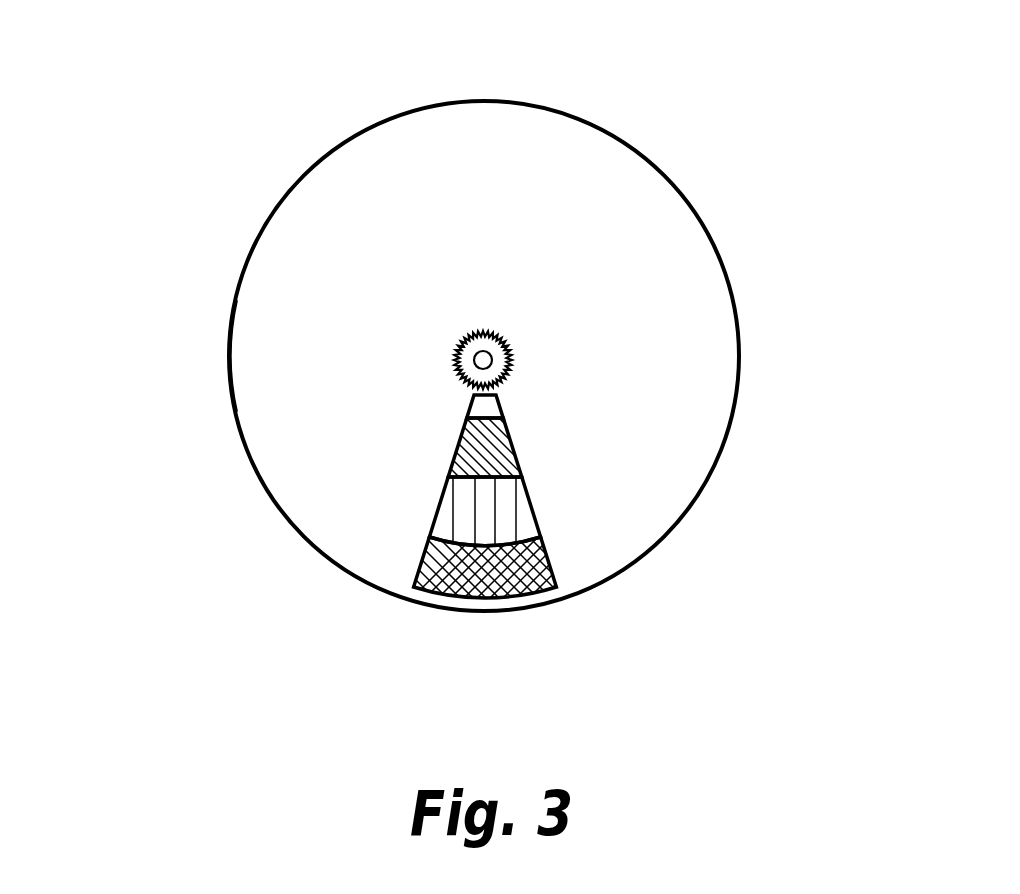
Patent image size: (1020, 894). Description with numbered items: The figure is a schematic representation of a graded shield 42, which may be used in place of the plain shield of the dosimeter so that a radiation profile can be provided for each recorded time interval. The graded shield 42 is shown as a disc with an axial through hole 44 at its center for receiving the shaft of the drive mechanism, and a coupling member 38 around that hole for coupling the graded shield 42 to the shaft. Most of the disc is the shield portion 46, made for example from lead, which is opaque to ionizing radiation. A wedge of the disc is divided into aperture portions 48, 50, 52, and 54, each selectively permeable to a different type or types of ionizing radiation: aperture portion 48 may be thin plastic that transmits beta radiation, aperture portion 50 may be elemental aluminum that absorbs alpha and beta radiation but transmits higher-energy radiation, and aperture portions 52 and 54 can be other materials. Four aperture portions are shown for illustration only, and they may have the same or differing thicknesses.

The coupling member 38 is at (465, 337).
The graded shield 42 is at (545, 110).
The axial through hole 44 is at (492, 352).
The shield portion 46 is at (275, 382).
The aperture portion 48 is at (510, 450).
The aperture portion 50 is at (523, 508).
The aperture portion 52 is at (543, 568).
The aperture portion 54 is at (487, 410).